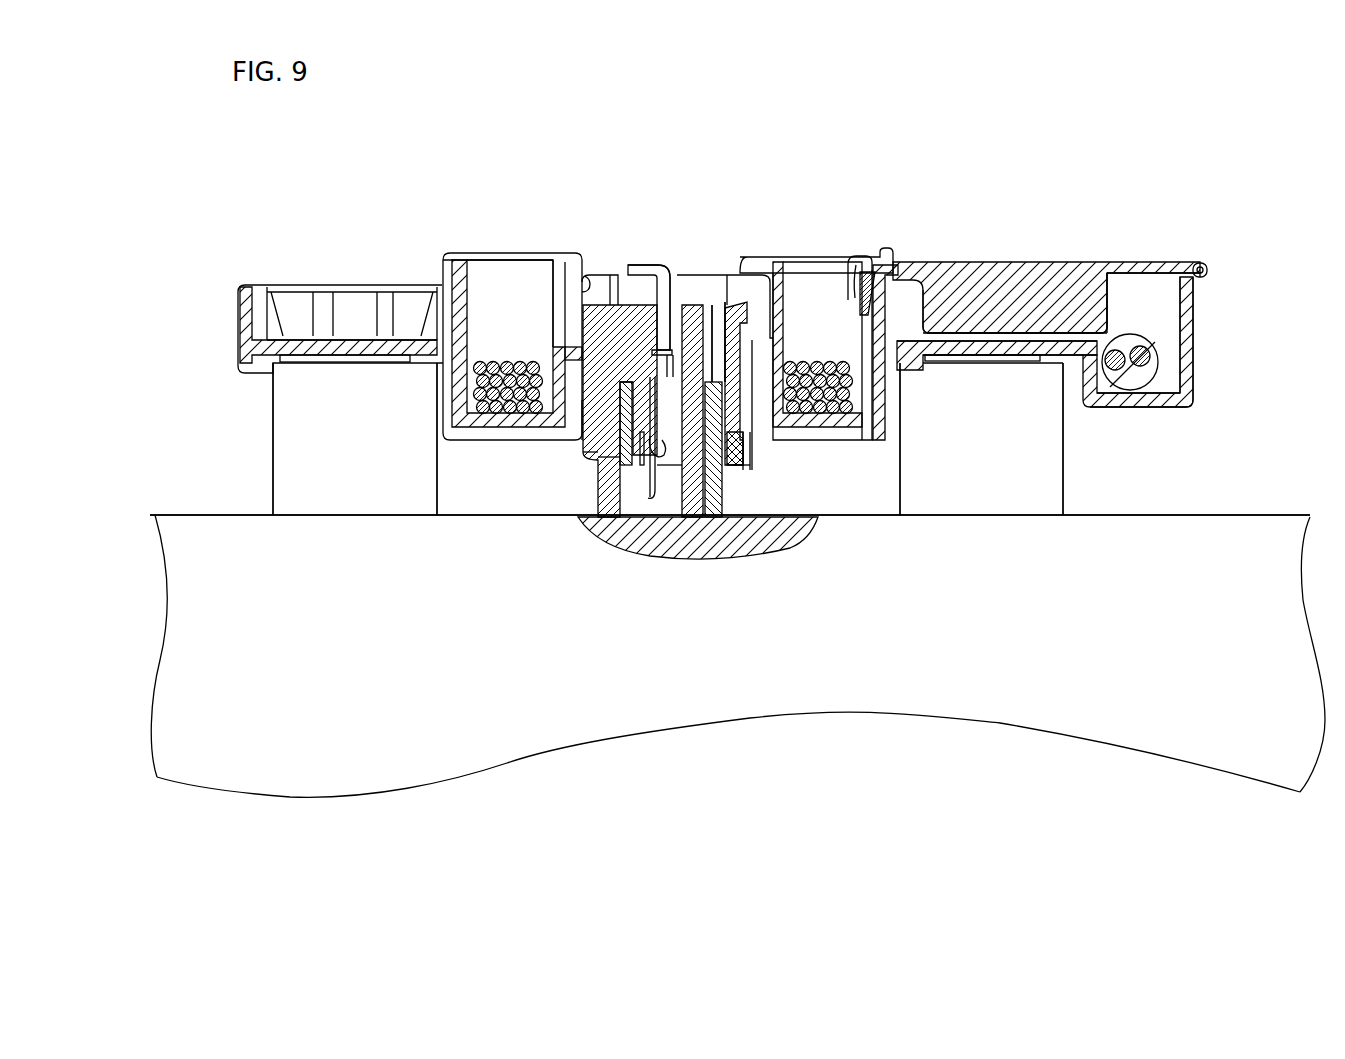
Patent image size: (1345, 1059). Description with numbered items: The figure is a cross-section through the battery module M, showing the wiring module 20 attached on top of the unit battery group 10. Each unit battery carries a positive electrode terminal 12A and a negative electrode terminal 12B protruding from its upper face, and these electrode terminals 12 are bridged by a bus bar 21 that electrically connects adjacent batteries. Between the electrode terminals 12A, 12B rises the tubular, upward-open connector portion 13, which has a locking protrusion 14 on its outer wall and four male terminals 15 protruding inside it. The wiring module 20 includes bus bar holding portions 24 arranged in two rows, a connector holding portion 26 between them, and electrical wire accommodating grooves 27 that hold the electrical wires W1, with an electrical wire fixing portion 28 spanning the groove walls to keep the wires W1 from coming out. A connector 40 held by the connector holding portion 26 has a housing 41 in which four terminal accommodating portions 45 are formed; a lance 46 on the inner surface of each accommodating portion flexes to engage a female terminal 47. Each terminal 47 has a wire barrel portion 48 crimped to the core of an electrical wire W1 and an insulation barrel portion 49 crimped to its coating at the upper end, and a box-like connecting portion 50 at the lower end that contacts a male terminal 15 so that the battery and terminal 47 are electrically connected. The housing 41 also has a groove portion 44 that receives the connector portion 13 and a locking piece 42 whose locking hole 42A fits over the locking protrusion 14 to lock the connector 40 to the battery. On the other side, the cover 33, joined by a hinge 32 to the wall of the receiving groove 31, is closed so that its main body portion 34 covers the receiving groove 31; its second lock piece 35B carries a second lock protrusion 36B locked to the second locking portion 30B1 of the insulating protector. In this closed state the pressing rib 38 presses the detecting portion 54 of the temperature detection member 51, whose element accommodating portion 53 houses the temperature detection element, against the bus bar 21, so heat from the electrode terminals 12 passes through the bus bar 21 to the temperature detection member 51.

The unit battery group 10 is at (1240, 512).
The electrode terminal 12 is at (621, 439).
The positive electrode terminal 12A is at (300, 428).
The negative electrode terminal 12B is at (1053, 448).
The connector portion 13 is at (712, 330).
The locking protrusion 14 is at (735, 470).
The male terminal 15 is at (665, 470).
The wiring module 20 is at (1226, 363).
The bus bar 21 is at (356, 337).
The bus bar holding portion 24 is at (412, 303).
The connector holding portion 26 is at (585, 275).
The electrical wire accommodating groove 27 is at (487, 277).
The electrical wire fixing portion 28 is at (823, 257).
The second locking portion 30B1 is at (850, 262).
The receiving groove 31 is at (1168, 342).
The hinge 32 is at (1207, 270).
The cover 33 is at (1091, 247).
The main body portion 34 is at (1133, 262).
The second lock piece 35B is at (892, 330).
The second lock protrusion 36B is at (873, 297).
The pressing rib 38 is at (1043, 290).
The connector 40 is at (705, 288).
The housing 41 is at (627, 463).
The locking piece 42 is at (692, 480).
The locking hole 42A is at (752, 455).
The groove portion 44 is at (623, 470).
The terminal accommodating portion 45 is at (682, 303).
The lance 46 is at (643, 470).
The terminal 47 is at (740, 462).
The wire barrel portion 48 is at (660, 387).
The insulation barrel portion 49 is at (663, 350).
The connecting portion 50 is at (650, 448).
The temperature detection member 51 is at (1160, 322).
The element accommodating portion 53 is at (1170, 395).
The detecting portion 54 is at (995, 335).
The electrical wire W1 is at (648, 265).
The battery module M is at (1234, 142).